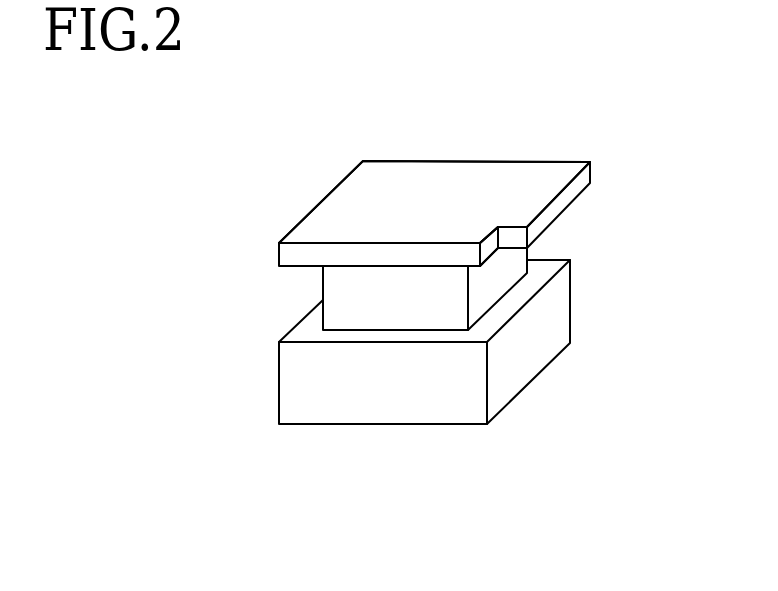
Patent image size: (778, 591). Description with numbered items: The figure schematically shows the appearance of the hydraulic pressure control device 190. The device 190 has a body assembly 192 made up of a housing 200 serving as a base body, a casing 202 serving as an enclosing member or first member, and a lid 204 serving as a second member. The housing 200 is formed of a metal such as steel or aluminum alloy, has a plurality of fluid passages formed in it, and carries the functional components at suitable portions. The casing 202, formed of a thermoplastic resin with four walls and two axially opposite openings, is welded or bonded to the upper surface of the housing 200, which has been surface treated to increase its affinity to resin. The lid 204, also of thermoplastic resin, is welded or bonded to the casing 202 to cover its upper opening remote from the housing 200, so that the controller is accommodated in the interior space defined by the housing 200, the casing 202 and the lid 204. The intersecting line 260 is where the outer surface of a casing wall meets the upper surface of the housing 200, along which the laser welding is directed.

The hydraulic pressure control device 190 is at (320, 172).
The body assembly 192 is at (302, 306).
The housing 200 is at (510, 390).
The casing 202 is at (505, 268).
The lid 204 is at (438, 200).
The intersecting line 260 is at (505, 293).